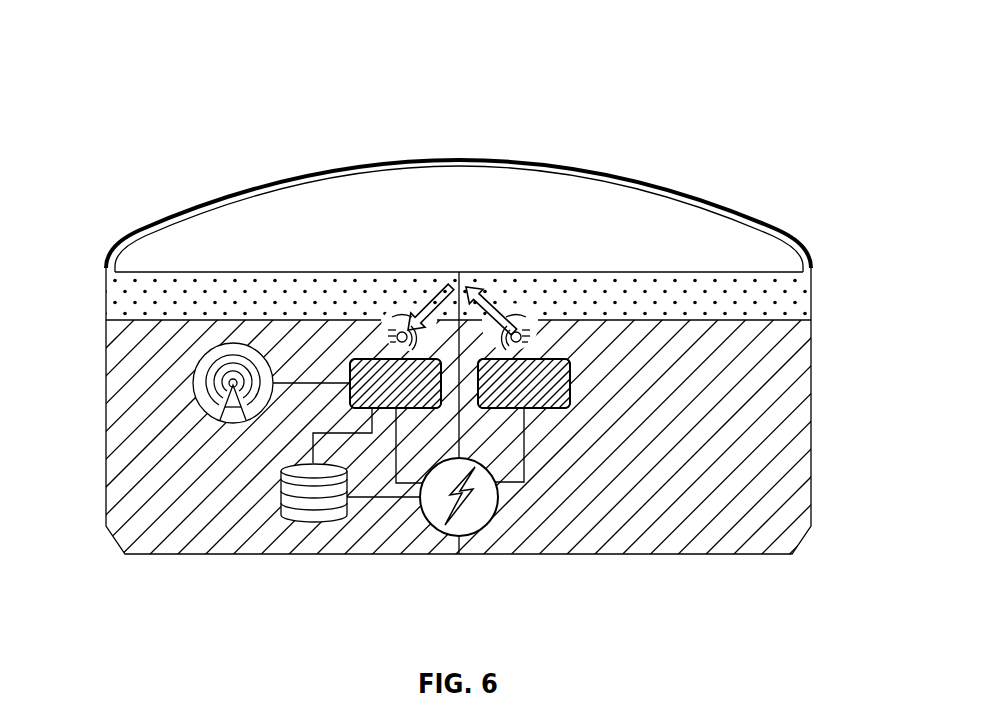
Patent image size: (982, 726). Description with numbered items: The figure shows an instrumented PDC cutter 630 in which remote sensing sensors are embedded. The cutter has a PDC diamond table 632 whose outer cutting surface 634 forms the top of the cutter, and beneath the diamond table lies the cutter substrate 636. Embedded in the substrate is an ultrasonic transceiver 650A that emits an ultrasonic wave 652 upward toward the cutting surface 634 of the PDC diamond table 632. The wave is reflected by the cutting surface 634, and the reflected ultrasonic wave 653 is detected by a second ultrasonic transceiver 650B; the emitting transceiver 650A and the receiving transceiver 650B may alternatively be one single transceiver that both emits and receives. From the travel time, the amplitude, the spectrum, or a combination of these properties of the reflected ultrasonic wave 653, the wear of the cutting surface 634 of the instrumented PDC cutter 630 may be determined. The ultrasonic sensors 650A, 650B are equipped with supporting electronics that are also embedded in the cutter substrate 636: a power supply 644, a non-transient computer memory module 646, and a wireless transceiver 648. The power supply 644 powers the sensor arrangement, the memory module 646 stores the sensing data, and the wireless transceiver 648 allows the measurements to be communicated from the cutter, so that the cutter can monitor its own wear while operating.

The instrumented PDC cutter 630 is at (188, 86).
The PDC diamond table 632 is at (117, 302).
The cutting surface 634 is at (242, 238).
The cutter substrate 636 is at (143, 437).
The power supply 644 is at (475, 533).
The non-transient computer memory module 646 is at (312, 527).
The wireless transceiver 648 is at (195, 393).
The ultrasonic transceiver 650A is at (570, 376).
The ultrasonic transceiver 650B is at (362, 358).
The ultrasonic wave 652 is at (513, 298).
The reflected ultrasonic wave 653 is at (410, 298).